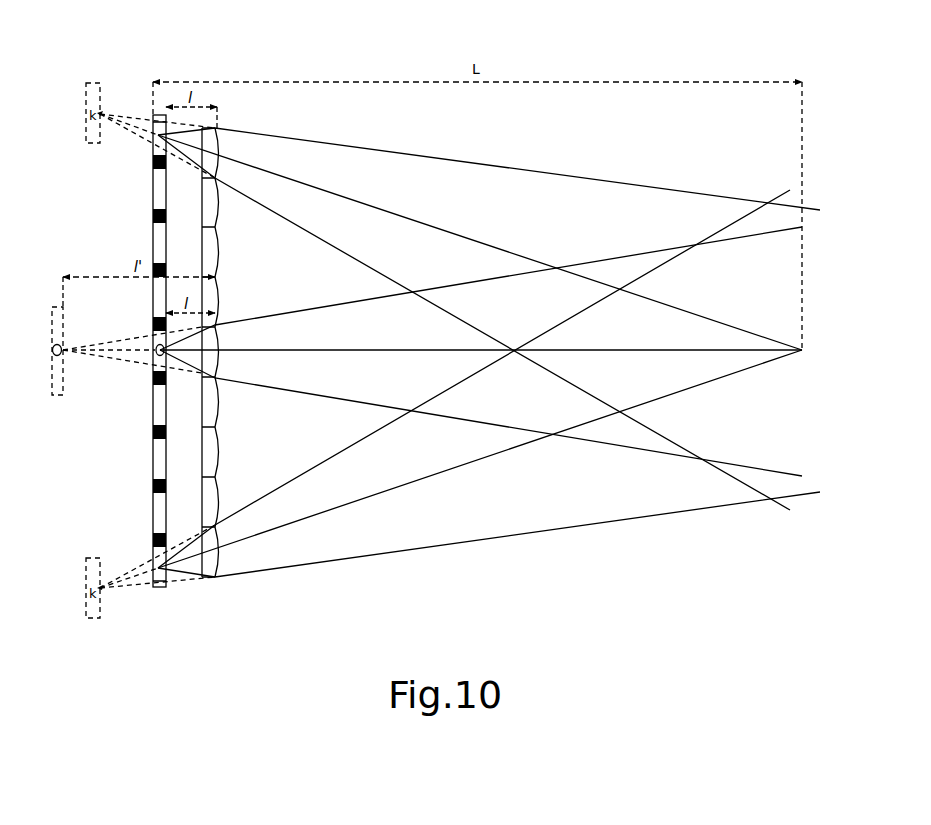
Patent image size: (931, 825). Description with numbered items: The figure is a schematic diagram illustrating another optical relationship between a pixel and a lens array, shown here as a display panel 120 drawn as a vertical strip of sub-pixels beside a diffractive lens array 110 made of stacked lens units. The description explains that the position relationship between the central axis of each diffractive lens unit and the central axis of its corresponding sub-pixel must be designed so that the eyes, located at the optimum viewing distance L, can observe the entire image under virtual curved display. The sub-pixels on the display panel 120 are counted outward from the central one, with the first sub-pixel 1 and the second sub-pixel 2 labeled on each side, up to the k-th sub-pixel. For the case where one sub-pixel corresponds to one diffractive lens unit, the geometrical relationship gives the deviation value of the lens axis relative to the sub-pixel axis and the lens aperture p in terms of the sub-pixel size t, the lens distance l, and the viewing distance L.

The lens array 110 is at (212, 577).
The display panel 120 is at (166, 385).
The first pixel 1 is at (159, 349).
The second pixel 2 is at (159, 349).